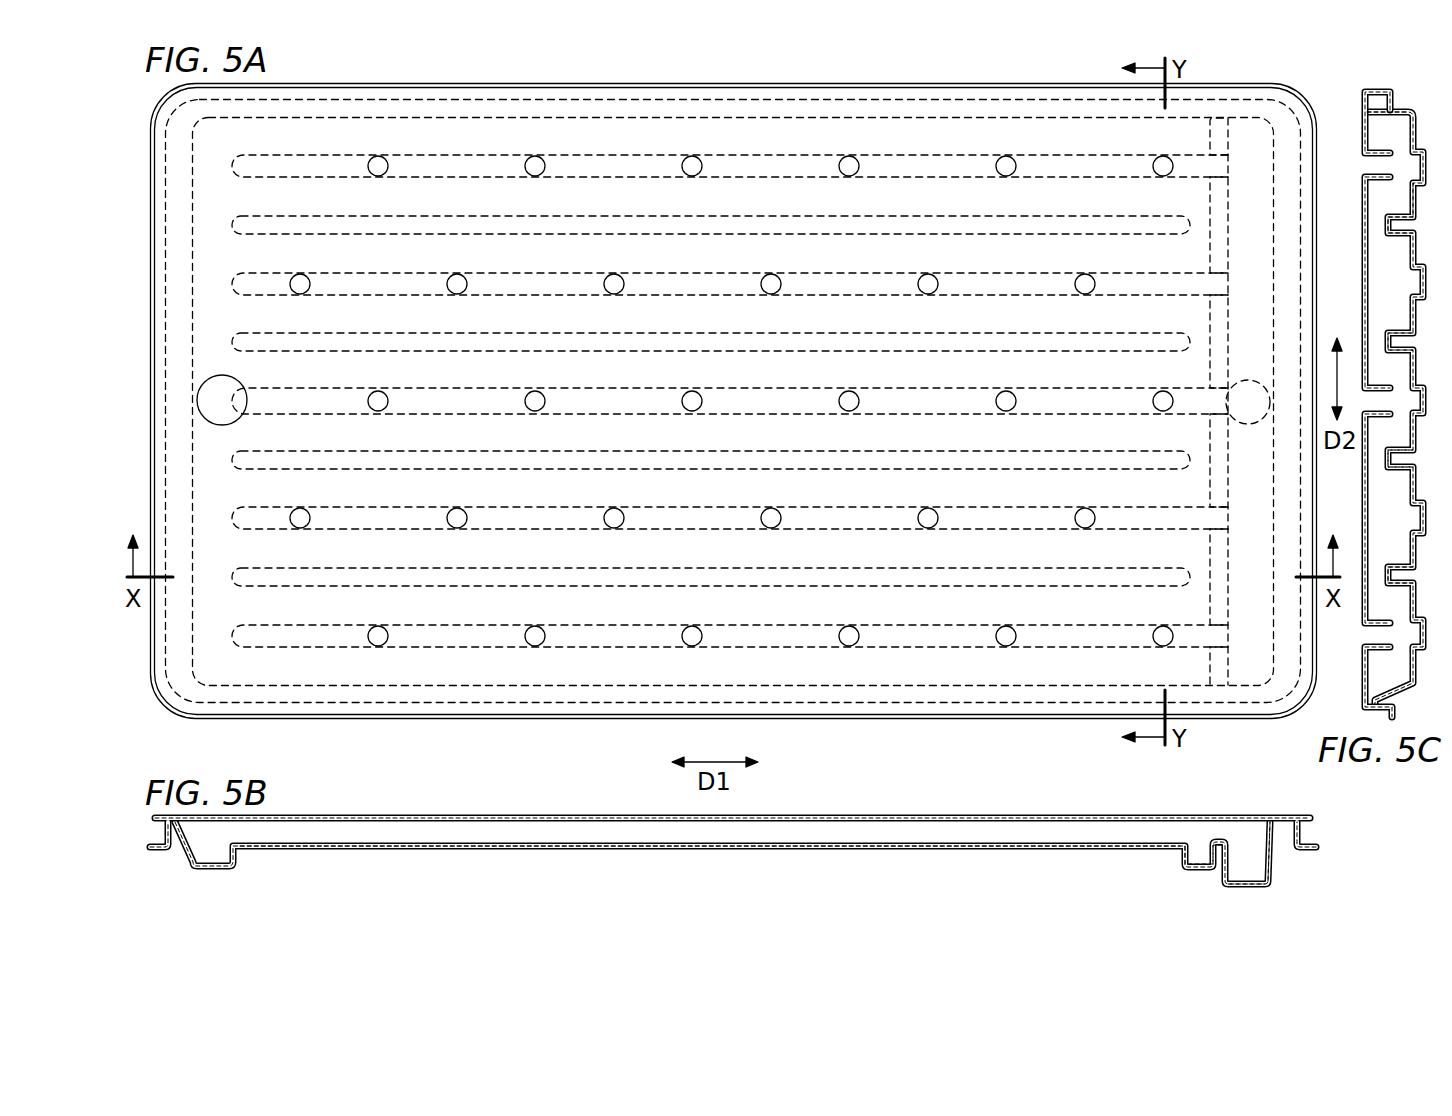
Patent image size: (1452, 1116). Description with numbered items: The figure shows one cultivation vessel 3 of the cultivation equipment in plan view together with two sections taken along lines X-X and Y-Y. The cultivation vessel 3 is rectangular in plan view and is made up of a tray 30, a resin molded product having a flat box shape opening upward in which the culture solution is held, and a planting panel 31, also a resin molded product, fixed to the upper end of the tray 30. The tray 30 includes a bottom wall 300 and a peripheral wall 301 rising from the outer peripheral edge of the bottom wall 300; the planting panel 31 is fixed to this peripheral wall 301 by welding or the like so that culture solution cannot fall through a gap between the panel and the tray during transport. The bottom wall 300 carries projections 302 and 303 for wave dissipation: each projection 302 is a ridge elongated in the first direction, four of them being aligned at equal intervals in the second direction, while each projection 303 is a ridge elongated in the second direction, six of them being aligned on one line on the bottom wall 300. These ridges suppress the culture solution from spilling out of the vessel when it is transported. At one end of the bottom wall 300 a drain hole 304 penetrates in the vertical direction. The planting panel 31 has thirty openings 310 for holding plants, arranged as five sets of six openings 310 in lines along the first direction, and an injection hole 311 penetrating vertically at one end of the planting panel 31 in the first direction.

In FIG. 5A, the cultivation vessel 3 is at (1280, 82).
In FIG. 5B, the tray 30 is at (1271, 859).
In FIG. 5C, the tray 30 is at (1415, 115).
In FIG. 5B, the planting panel 31 is at (1271, 818).
In FIG. 5C, the planting panel 31 is at (1364, 123).
In FIG. 5B, the bottom wall 300 is at (1246, 870).
In FIG. 5C, the bottom wall 300 is at (1410, 197).
In FIG. 5B, the peripheral wall 301 is at (1262, 845).
In FIG. 5C, the peripheral wall 301 is at (1398, 108).
In FIG. 5A, the projection 302 is at (1080, 232).
In FIG. 5B, the projection 302 is at (1010, 841).
In FIG. 5C, the projection 302 is at (1390, 226).
In FIG. 5A, the projection 303 is at (1218, 142).
In FIG. 5B, the projection 303 is at (1208, 843).
In FIG. 5A, the drain hole 304 is at (1230, 413).
In FIG. 5A, the opening 310 is at (378, 164).
In FIG. 5A, the injection hole 311 is at (244, 413).